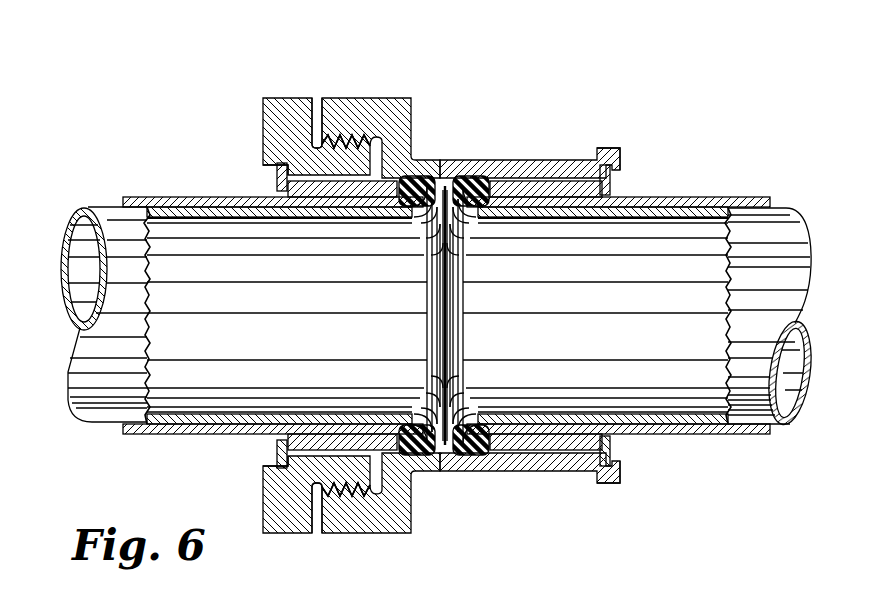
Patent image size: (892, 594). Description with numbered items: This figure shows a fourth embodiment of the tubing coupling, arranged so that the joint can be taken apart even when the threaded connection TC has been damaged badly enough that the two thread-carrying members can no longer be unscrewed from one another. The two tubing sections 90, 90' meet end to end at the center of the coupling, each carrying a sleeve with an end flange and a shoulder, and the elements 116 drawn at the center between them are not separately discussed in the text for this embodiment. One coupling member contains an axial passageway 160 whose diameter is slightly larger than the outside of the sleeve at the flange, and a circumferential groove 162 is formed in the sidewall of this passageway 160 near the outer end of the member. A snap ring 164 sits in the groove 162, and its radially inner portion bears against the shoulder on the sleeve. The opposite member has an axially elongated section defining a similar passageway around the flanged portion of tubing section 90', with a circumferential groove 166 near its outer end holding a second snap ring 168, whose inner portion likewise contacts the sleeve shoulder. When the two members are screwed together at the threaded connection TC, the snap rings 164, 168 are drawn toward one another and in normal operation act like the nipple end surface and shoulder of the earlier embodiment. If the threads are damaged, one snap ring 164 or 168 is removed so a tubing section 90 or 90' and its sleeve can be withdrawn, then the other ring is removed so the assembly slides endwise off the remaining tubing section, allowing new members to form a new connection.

The tubing section 90 is at (272, 315).
The tubing section 90' is at (640, 317).
The O-ring seal 116 is at (418, 176).
The axial passageway 160 is at (312, 147).
The circumferential groove 162 is at (266, 164).
The snap ring 164 is at (278, 182).
The circumferential groove 166 is at (612, 178).
The snap ring 168 is at (616, 192).
The threaded connection TC is at (348, 134).